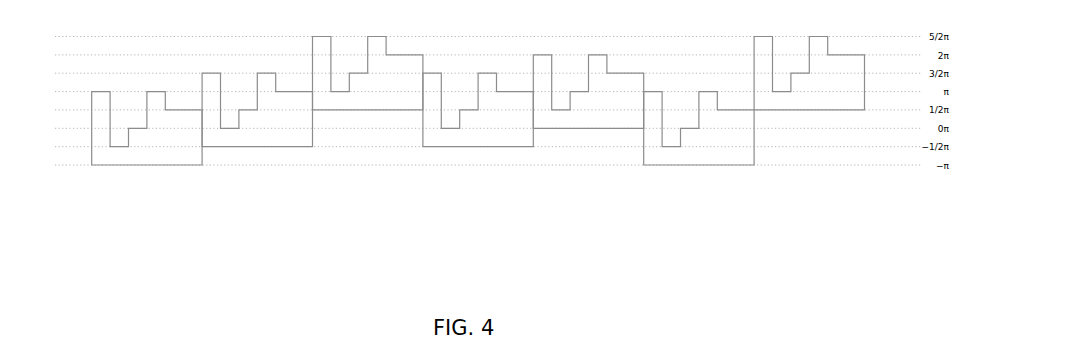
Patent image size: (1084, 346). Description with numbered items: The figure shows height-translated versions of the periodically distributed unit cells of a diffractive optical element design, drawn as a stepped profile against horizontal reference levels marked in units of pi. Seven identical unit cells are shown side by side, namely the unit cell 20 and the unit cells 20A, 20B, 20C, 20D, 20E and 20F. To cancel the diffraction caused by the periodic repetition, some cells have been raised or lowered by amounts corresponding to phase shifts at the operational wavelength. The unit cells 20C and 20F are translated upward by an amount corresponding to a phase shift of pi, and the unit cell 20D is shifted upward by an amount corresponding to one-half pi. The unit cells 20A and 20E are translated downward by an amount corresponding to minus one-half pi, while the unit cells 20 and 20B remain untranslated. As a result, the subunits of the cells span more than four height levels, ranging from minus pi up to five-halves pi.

The unit cell 20 is at (482, 147).
The unit cell 20A is at (125, 162).
The unit cell 20B is at (258, 148).
The unit cell 20C is at (356, 115).
The unit cell 20D is at (596, 130).
The unit cell 20E is at (696, 160).
The unit cell 20F is at (825, 111).